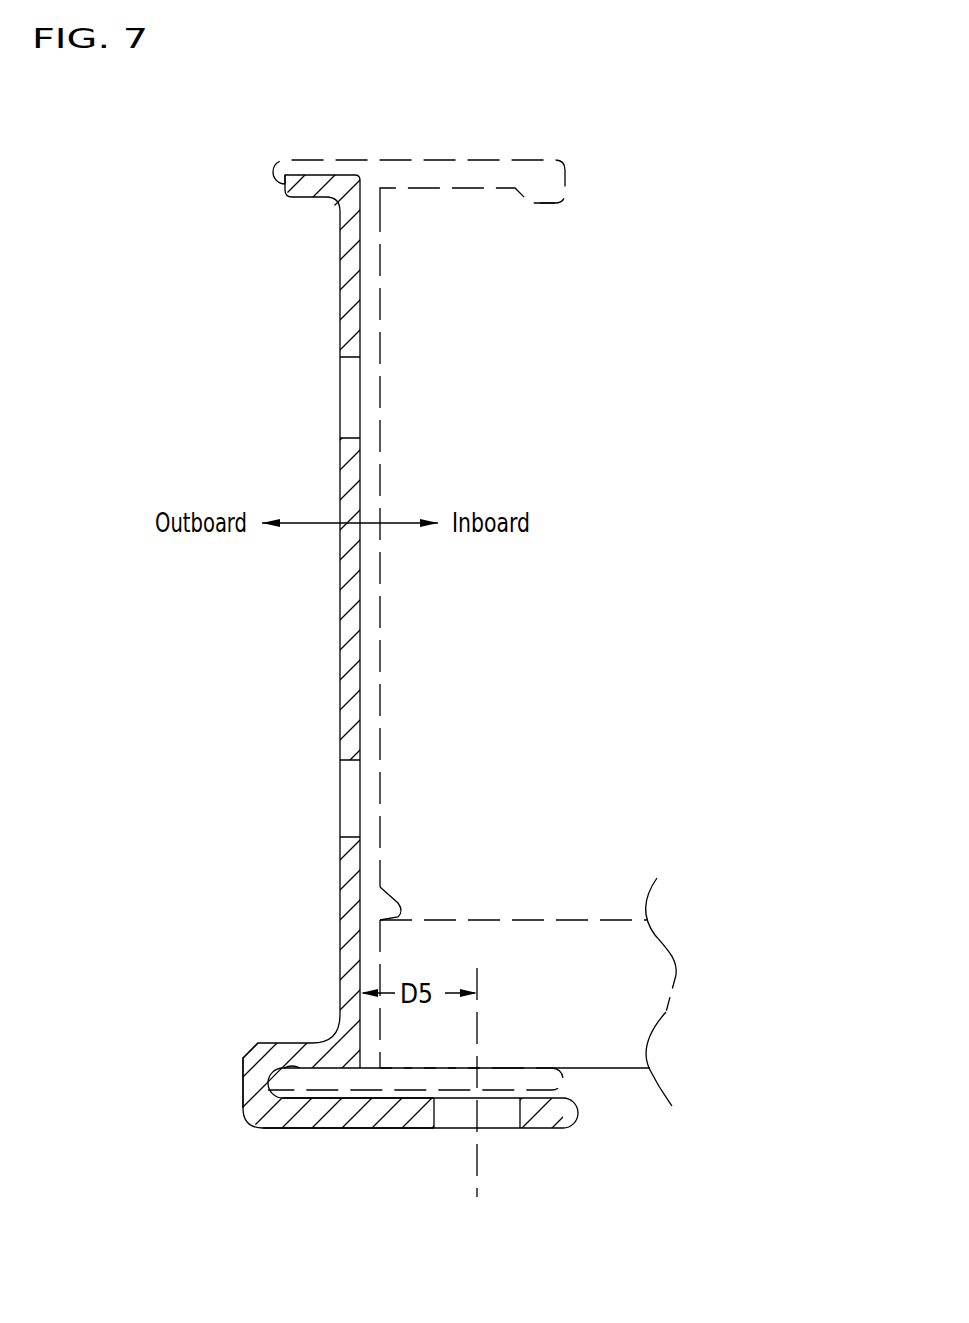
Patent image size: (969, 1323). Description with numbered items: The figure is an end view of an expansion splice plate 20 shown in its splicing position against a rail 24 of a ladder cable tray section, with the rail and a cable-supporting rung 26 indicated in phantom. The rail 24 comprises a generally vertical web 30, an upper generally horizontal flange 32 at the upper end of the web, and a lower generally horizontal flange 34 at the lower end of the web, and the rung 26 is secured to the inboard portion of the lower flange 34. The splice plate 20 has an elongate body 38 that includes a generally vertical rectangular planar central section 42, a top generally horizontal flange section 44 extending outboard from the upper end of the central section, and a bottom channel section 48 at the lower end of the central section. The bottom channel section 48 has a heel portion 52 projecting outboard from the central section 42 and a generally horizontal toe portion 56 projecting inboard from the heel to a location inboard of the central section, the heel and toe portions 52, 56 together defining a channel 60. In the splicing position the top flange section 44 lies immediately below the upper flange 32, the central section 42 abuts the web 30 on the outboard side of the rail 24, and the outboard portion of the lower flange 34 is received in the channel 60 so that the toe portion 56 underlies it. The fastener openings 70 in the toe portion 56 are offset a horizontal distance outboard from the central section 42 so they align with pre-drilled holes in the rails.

The expansion splice plate 20 is at (327, 175).
The rail 24 is at (571, 155).
The cable-supporting rung 26 is at (523, 920).
The web 30 is at (381, 457).
The upper flange 32 is at (553, 203).
The lower flange 34 is at (561, 1077).
The elongate body 38 is at (336, 265).
The central section 42 is at (340, 639).
The top flange section 44 is at (305, 198).
The bottom channel section 48 is at (250, 1135).
The heel portion 52 is at (242, 1082).
The toe portion 56 is at (381, 1128).
The channel 60 is at (320, 1077).
The fastener opening 70 is at (352, 358).